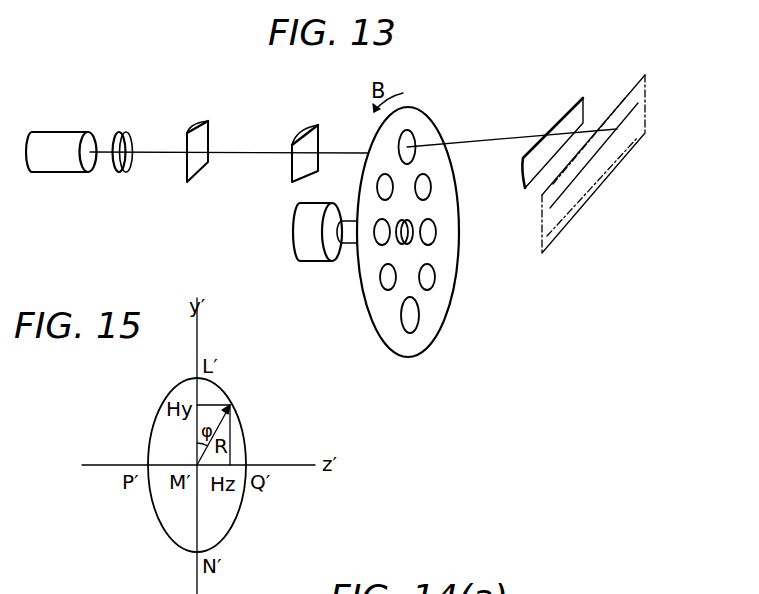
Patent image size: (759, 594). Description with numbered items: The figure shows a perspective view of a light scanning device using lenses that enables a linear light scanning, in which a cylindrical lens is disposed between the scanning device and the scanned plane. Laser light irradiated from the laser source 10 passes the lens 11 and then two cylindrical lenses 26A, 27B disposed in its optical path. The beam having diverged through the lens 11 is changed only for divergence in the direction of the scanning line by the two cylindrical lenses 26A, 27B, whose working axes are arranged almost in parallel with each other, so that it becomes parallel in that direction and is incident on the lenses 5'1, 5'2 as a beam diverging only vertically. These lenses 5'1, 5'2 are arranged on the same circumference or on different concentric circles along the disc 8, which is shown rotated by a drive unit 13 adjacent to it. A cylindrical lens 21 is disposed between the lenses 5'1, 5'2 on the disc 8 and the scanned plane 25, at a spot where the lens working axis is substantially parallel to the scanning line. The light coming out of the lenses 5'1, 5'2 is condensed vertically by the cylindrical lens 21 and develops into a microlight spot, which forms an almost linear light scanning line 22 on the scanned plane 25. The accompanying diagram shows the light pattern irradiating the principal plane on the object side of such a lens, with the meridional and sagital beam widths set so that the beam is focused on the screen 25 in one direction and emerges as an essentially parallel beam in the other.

The laser source 10 is at (58, 165).
The lens 11 is at (127, 132).
The cylindrical lens 26A is at (190, 127).
The cylindrical lens 27B is at (303, 135).
The disc 8 is at (416, 110).
The lens 5'1 is at (441, 330).
The lens 5'2 is at (459, 283).
The motor 13 is at (302, 248).
The cylindrical lens 21 is at (521, 180).
The light scanning line 22 is at (560, 197).
The scanned plane 25 is at (632, 147).